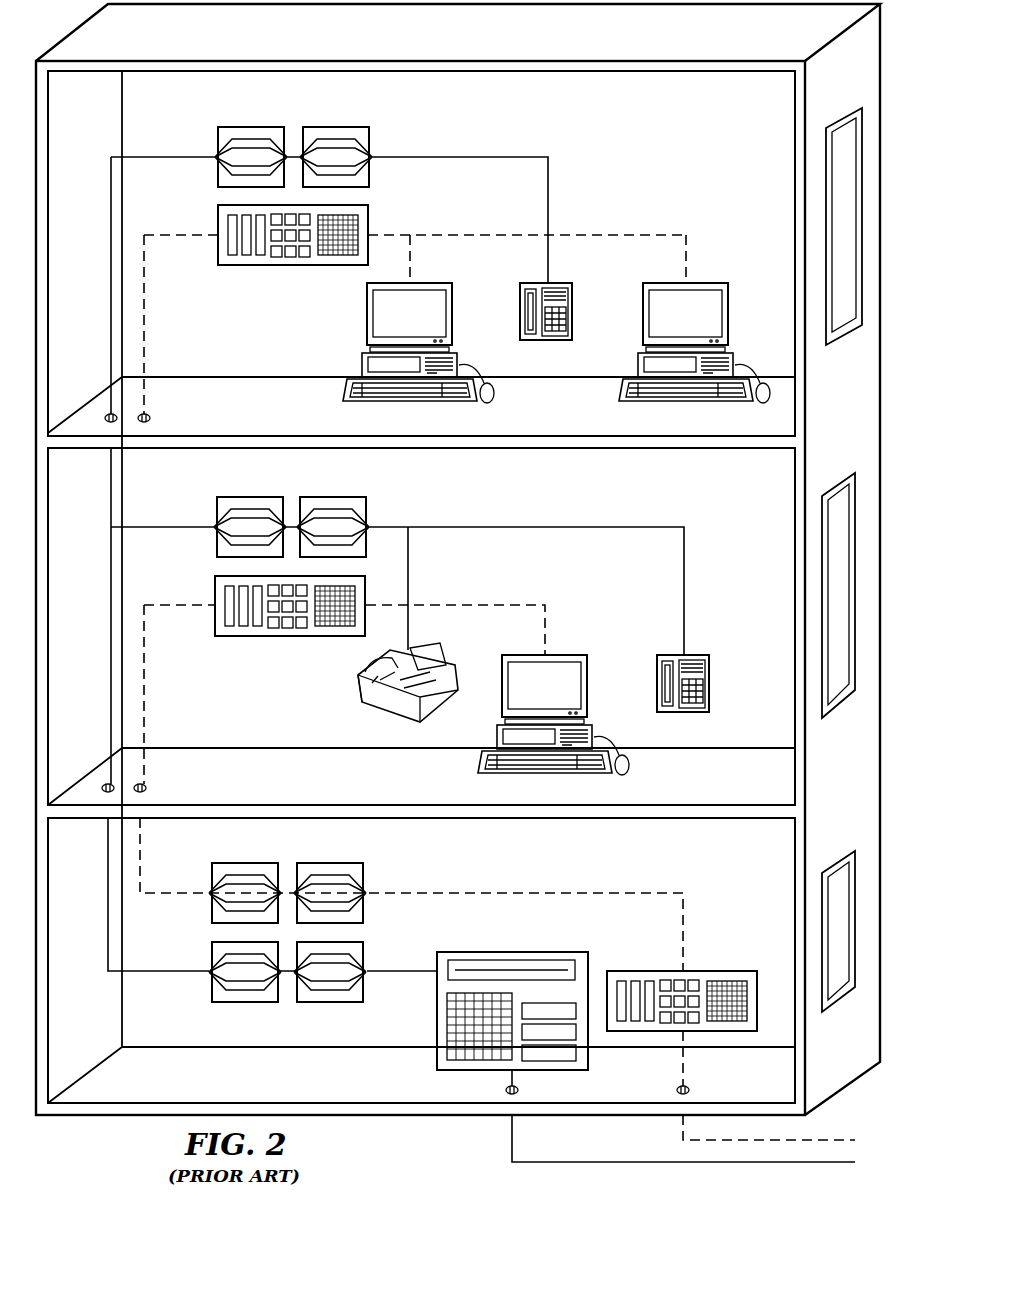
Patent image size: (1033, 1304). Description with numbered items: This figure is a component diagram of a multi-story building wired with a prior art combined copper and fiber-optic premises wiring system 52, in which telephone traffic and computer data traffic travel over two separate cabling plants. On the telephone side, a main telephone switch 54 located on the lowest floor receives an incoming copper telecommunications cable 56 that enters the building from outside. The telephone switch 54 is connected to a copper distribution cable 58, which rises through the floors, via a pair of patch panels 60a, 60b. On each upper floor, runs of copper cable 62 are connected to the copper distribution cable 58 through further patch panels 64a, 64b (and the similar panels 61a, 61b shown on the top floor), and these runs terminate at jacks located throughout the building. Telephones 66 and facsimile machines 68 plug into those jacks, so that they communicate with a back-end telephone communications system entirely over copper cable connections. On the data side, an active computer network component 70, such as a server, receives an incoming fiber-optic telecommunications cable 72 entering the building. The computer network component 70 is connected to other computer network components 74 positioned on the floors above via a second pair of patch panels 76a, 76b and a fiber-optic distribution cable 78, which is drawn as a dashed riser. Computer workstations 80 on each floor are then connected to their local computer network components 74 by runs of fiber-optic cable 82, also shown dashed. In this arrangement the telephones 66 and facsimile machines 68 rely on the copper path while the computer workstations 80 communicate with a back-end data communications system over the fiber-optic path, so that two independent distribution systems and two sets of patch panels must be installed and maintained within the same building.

The combined copper and fiber-optic premises wiring system 52 is at (626, 186).
The main telephone switch 54 is at (436, 1025).
The incoming copper telecommunications cable 56 is at (510, 1140).
The copper distribution cable 58 is at (160, 971).
The patch panel 60a is at (210, 992).
The patch panel 60b is at (367, 992).
The hub 61a is at (214, 140).
The hub 61b is at (374, 140).
The runs of copper cable 62 is at (480, 157).
The patch panel 64a is at (213, 510).
The patch panel 64b is at (372, 510).
The telephone 66 is at (575, 315).
The facsimile machine 68 is at (386, 706).
The active computer network component 70 is at (645, 971).
The incoming fiber-optic telecommunications cable 72 is at (688, 1072).
The computer network component 74 is at (372, 226).
The patch panel 76a is at (210, 877).
The patch panel 76b is at (368, 877).
The fiber-optic distribution cable 78 is at (193, 240).
The computer workstation 80 is at (366, 317).
The runs of fiber-optic cable 82 is at (690, 262).